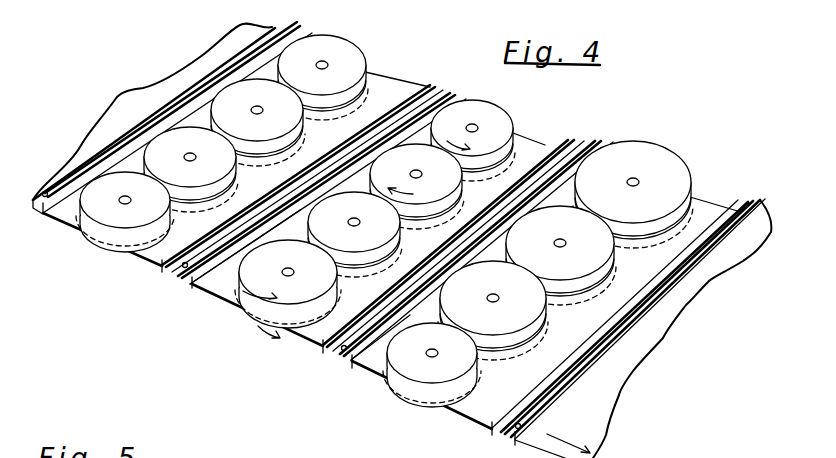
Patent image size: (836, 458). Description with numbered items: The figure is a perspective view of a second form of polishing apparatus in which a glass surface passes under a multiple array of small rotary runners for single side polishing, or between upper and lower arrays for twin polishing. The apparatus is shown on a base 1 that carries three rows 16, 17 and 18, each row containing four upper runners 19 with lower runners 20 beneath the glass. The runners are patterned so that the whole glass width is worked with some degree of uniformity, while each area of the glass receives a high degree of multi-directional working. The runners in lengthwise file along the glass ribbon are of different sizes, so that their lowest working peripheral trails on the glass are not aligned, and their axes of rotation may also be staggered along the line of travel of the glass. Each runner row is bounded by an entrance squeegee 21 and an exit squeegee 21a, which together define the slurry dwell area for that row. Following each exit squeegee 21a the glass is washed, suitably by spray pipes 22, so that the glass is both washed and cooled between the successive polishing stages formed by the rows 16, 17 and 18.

The base or bed plate 1 is at (143, 90).
The row of runners 16 is at (361, 37).
The row of runners 17 is at (505, 101).
The row of runners 18 is at (682, 144).
The upper runner 19 is at (358, 57).
The lower runner 20 is at (93, 253).
The entrance squeegee 21 is at (298, 27).
The exit squeegee 21a is at (427, 90).
The spray pipe 22 is at (58, 178).